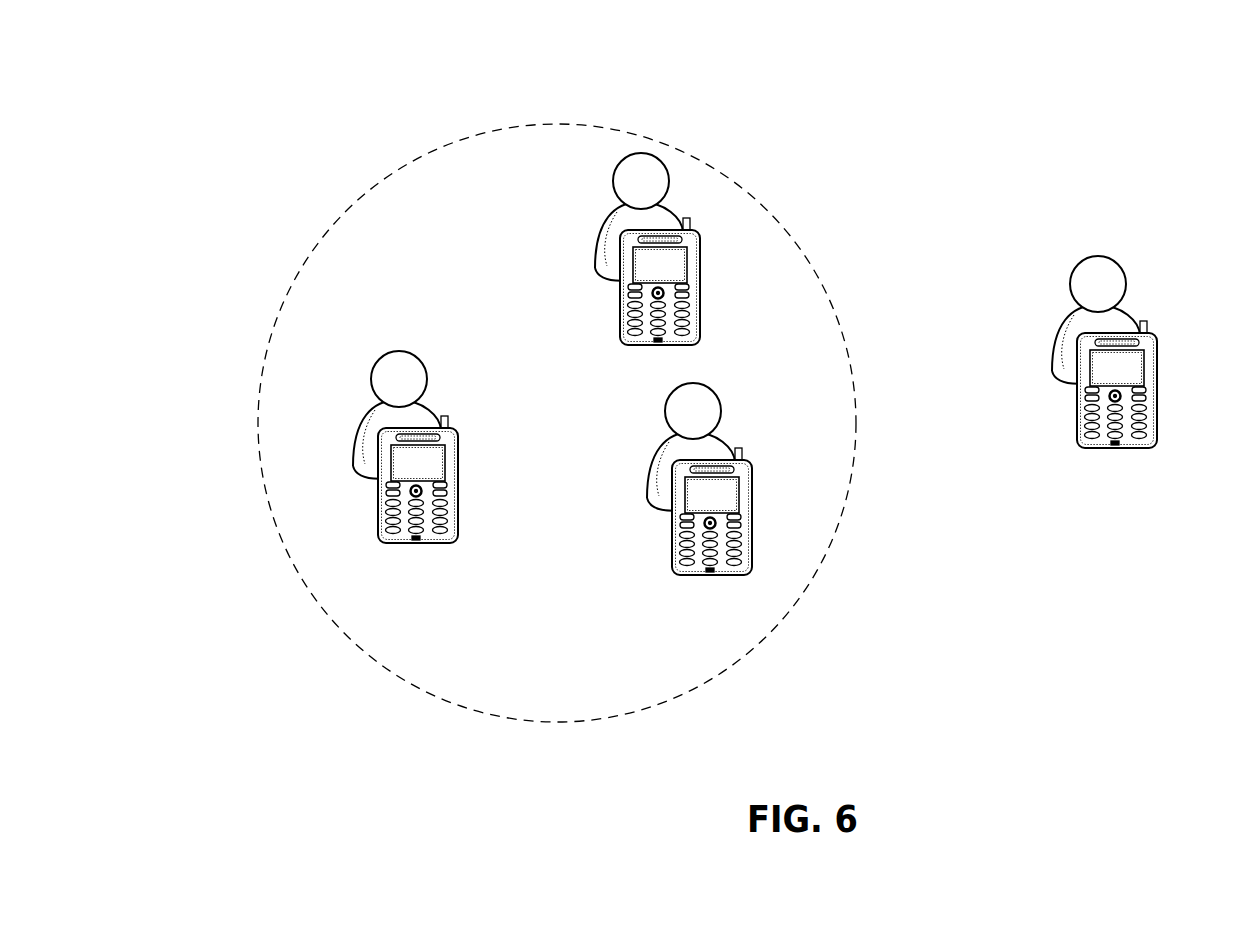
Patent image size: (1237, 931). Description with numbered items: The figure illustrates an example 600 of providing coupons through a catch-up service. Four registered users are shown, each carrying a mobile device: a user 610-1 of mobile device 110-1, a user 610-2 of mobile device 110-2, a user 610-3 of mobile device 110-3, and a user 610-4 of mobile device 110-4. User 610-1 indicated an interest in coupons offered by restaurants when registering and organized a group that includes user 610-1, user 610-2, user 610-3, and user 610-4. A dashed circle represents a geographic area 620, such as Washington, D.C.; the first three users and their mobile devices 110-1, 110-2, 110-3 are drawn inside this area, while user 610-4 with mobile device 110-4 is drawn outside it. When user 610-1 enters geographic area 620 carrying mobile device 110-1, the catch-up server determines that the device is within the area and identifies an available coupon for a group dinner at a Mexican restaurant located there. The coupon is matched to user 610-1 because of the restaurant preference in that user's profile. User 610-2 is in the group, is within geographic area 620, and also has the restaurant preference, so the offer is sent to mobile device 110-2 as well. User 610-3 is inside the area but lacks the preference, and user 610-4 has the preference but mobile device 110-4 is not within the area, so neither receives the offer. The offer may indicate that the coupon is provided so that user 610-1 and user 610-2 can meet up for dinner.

The example of providing coupons 600 is at (322, 69).
The geographic area 620 is at (319, 238).
The user 610-1 is at (594, 239).
The user 610-2 is at (647, 468).
The user 610-3 is at (353, 435).
The user 610-4 is at (1052, 342).
The mobile device 110-1 is at (700, 300).
The mobile device 110-2 is at (752, 530).
The mobile device 110-3 is at (458, 500).
The mobile device 110-4 is at (1158, 404).